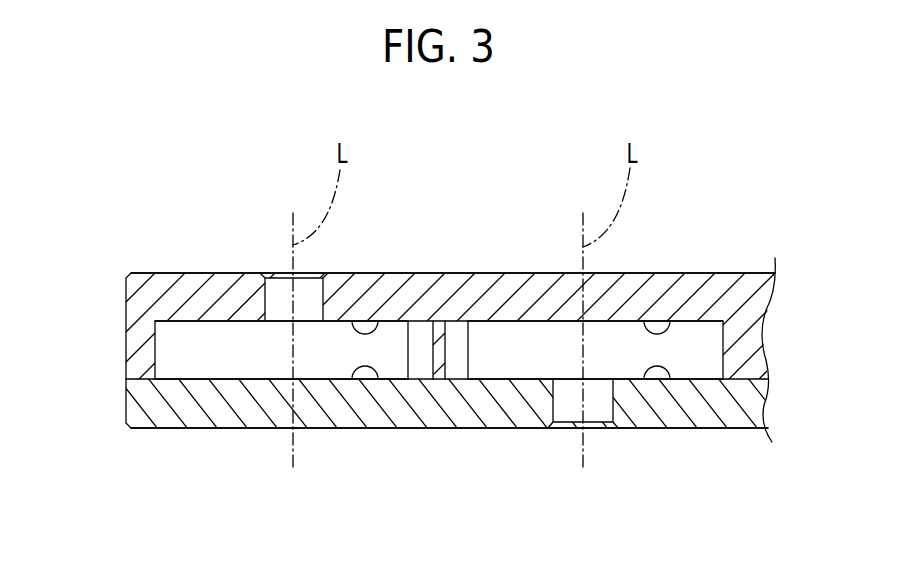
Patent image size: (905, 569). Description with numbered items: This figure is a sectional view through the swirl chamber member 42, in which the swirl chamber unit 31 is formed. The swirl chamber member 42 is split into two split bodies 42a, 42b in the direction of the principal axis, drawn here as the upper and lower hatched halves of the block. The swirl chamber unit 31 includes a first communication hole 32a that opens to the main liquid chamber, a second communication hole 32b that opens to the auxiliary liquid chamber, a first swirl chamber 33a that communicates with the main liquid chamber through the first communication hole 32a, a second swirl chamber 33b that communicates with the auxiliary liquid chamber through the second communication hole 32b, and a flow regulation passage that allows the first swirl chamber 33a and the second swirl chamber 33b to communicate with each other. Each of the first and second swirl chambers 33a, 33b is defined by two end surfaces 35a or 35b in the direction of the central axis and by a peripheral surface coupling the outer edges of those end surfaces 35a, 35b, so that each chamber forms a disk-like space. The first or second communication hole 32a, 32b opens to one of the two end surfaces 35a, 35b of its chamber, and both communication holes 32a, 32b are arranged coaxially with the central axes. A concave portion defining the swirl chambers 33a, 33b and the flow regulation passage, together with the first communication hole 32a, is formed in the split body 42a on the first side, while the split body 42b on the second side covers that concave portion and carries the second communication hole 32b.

The swirl chamber member 42 is at (128, 265).
The split body 42a is at (744, 271).
The split body 42b is at (732, 428).
The swirl chamber unit 31 is at (157, 345).
The first communication hole 32a is at (282, 288).
The second communication hole 32b is at (570, 403).
The first swirl chamber 33a is at (225, 375).
The second swirl chamber 33b is at (540, 323).
The end surfaces 35a is at (377, 328).
The end surfaces 35b is at (669, 328).